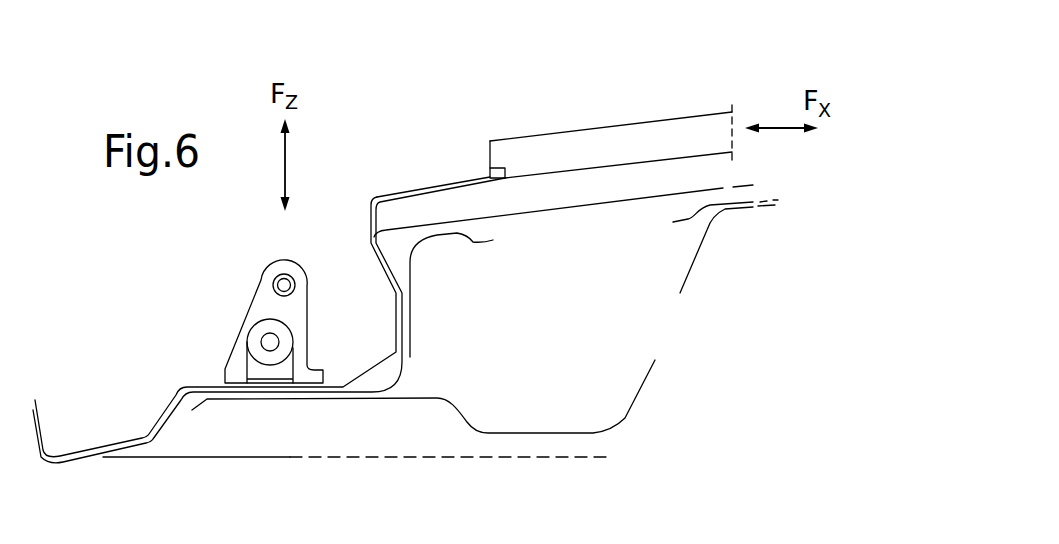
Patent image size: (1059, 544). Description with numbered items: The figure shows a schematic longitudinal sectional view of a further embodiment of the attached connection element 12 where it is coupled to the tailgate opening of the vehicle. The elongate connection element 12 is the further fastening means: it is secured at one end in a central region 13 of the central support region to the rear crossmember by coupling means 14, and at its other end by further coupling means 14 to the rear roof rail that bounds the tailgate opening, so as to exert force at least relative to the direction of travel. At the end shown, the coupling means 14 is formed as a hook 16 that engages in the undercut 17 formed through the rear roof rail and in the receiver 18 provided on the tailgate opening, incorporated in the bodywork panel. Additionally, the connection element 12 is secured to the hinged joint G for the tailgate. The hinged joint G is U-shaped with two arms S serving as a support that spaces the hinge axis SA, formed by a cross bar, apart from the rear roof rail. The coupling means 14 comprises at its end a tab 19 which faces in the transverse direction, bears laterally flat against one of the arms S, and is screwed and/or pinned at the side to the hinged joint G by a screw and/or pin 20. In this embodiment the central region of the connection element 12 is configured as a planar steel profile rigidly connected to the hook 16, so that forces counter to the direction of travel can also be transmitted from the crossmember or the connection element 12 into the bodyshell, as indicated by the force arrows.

The connection element 12 is at (667, 100).
The central region 13 is at (582, 127).
The coupling means 14 is at (445, 170).
The hook 16 is at (397, 194).
The receiver 18 is at (269, 320).
The undercut 17 is at (344, 257).
The hinged joint G is at (221, 328).
The arm S is at (257, 287).
The hinge axis SA is at (282, 281).
The screw and/or pin 20 is at (247, 328).
The tab 19 is at (253, 368).